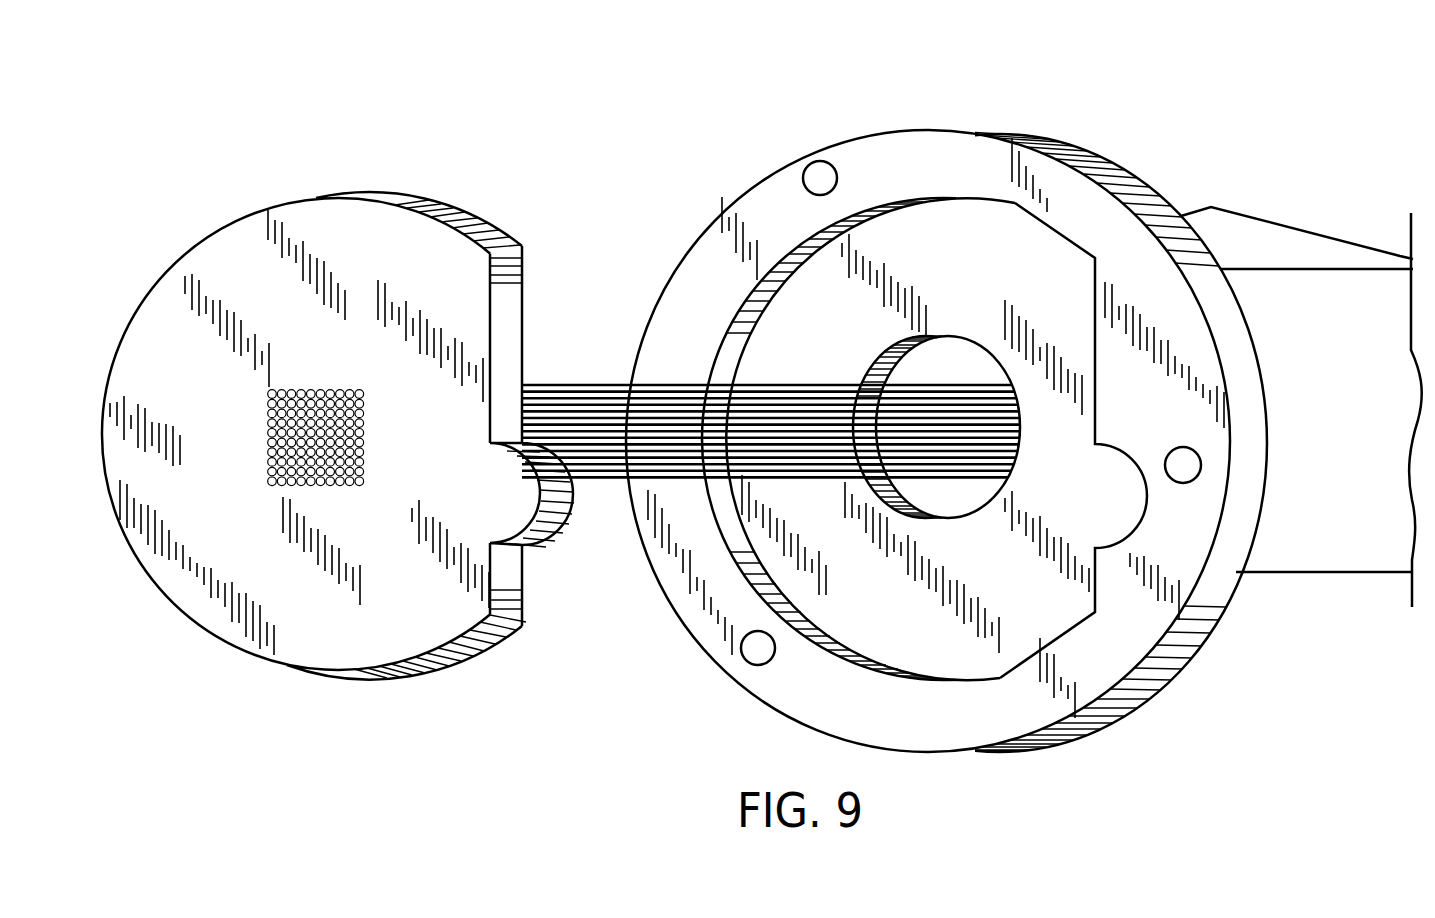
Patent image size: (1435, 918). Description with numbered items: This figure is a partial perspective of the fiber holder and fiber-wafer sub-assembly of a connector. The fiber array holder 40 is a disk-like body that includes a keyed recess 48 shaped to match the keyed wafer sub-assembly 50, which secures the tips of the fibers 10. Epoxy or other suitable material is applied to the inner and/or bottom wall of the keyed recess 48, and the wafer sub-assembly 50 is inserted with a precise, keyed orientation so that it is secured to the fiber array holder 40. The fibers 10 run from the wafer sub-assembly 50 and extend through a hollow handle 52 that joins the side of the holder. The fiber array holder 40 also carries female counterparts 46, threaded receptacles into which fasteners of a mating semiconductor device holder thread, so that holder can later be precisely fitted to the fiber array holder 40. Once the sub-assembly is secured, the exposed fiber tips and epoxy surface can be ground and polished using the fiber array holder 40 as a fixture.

The fibers 10 is at (595, 384).
The fiber array holder 40 is at (1130, 165).
The female counterparts 46 is at (746, 648).
The keyed recess 48 is at (826, 326).
The keyed wafer sub-assembly 50 is at (259, 290).
The hollow handle 52 is at (1343, 330).